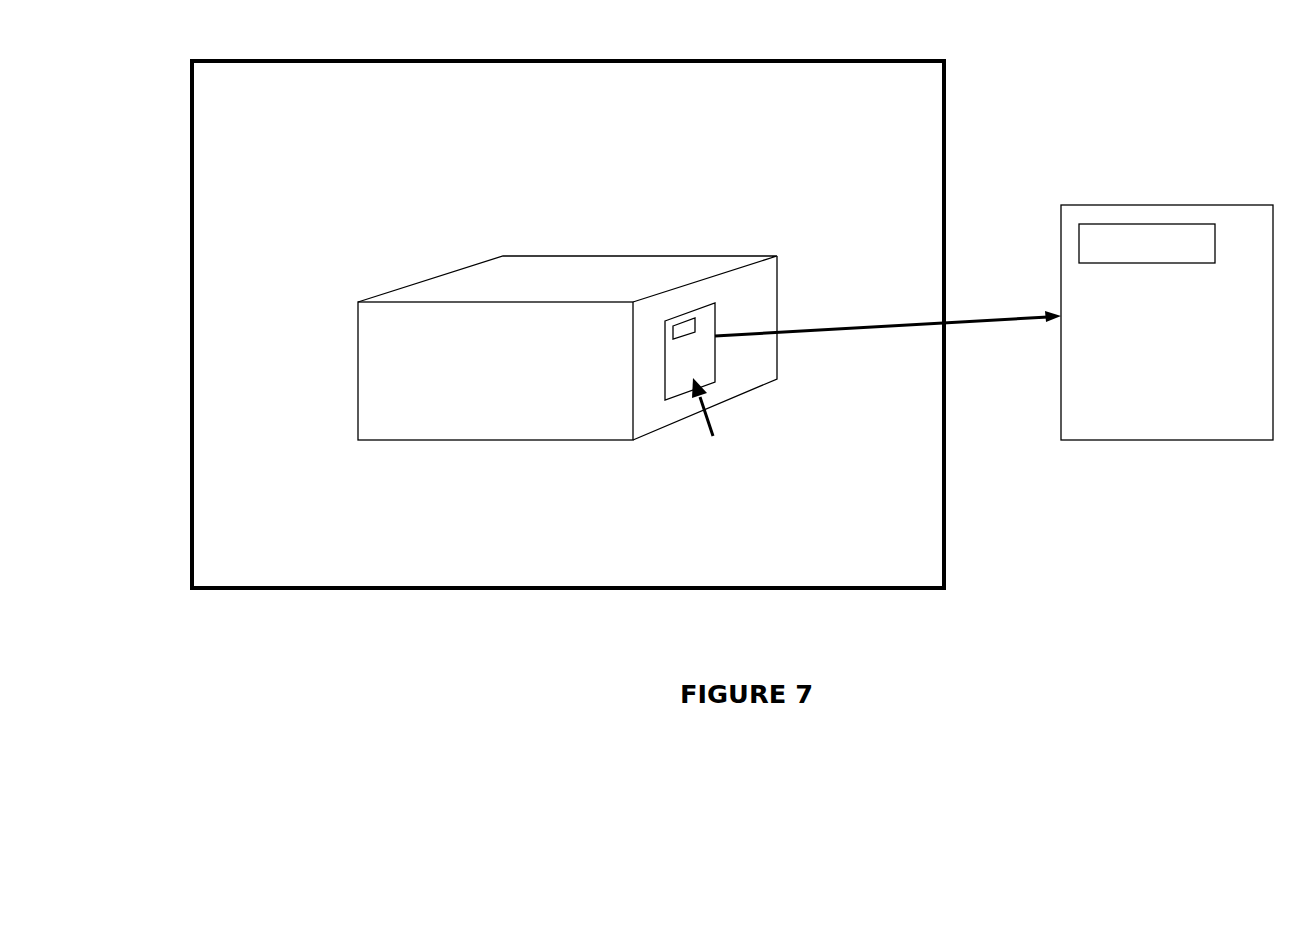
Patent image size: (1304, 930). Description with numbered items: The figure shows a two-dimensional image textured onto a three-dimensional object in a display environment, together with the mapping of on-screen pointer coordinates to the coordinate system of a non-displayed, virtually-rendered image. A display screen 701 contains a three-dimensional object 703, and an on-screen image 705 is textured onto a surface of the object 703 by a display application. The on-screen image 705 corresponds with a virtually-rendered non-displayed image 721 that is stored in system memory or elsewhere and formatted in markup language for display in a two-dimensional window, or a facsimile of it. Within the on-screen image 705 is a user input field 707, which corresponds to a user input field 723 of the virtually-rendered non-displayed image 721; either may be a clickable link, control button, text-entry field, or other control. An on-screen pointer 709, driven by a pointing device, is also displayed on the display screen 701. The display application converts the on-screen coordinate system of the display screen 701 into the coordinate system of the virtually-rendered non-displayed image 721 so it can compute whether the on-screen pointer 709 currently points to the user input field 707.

The display screen 701 is at (428, 589).
The 3D object 703 is at (723, 255).
The on-screen image 705 is at (715, 361).
The user input field 707 is at (684, 323).
The on-screen pointer 709 is at (713, 418).
The virtually-rendered non-displayed image 721 is at (1157, 440).
The user input field 723 is at (1137, 238).